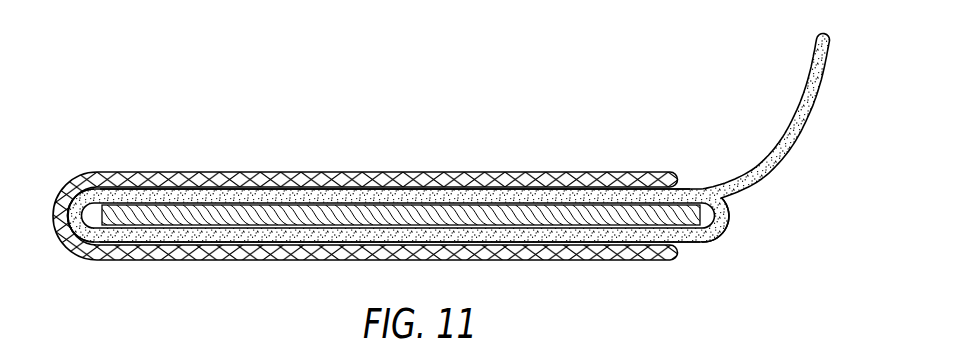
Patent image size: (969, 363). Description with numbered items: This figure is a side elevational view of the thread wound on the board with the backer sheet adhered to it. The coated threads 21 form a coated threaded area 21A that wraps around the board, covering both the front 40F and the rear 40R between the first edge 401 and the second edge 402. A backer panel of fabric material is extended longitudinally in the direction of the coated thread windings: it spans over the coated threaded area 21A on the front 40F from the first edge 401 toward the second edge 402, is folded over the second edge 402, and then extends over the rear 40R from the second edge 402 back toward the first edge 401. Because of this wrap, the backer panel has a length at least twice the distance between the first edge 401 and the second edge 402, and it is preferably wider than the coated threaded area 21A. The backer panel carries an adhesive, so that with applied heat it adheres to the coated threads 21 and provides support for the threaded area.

The coated threads 21 is at (799, 105).
The coated threaded area 21A is at (172, 190).
The front 40F is at (687, 192).
The rear 40R is at (687, 232).
The first edge 401 is at (95, 222).
The second edge 402 is at (727, 216).